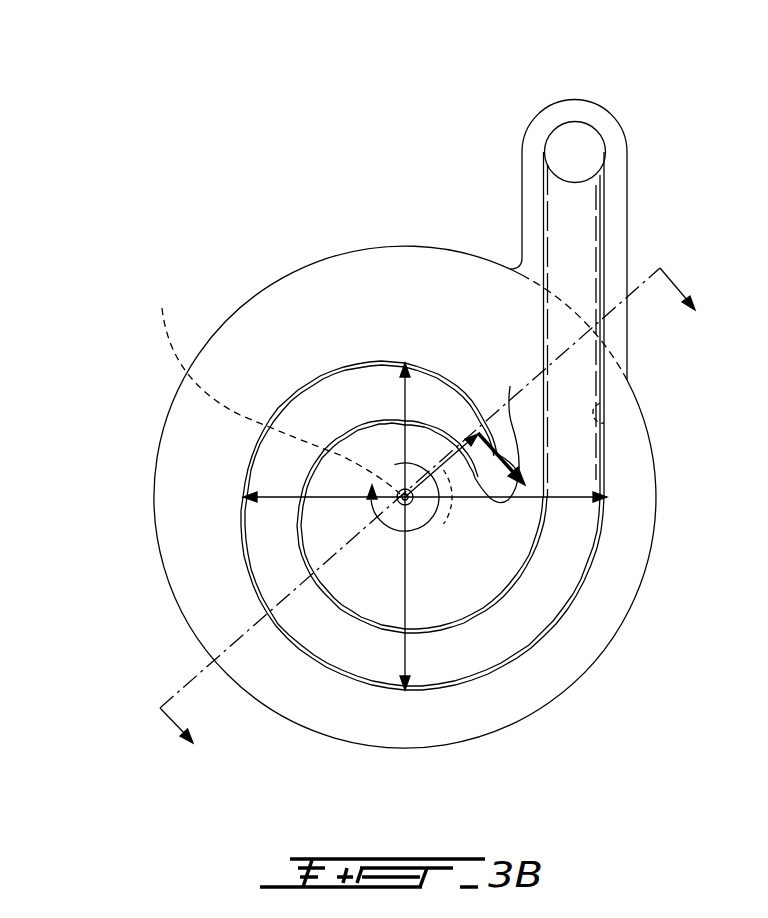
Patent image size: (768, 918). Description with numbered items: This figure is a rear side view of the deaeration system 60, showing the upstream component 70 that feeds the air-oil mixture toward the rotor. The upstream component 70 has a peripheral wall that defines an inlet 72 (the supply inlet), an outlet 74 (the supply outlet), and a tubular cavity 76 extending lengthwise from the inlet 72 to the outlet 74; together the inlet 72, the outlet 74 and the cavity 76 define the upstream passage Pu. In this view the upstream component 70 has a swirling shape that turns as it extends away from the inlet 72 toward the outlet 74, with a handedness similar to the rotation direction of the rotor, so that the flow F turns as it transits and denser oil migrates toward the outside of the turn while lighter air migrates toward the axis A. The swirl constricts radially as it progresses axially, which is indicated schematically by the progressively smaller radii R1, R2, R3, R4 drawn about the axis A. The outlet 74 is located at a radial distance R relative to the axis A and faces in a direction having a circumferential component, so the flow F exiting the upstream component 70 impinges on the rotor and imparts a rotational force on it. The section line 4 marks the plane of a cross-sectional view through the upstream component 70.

The scroll assembly 60 is at (422, 398).
The upstream component 70 is at (640, 468).
The inlet 72 is at (581, 124).
The outlet 74 is at (500, 502).
The cavity 76 is at (600, 403).
The section line 4- 4 is at (417, 489).
The upstream passage Pu is at (597, 152).
The axis A is at (277, 385).
The flow F is at (501, 421).
The radial distance R is at (441, 497).
The radius R1 is at (560, 500).
The radius R2 is at (405, 577).
The radius R3 is at (337, 500).
The radius R4 is at (407, 412).